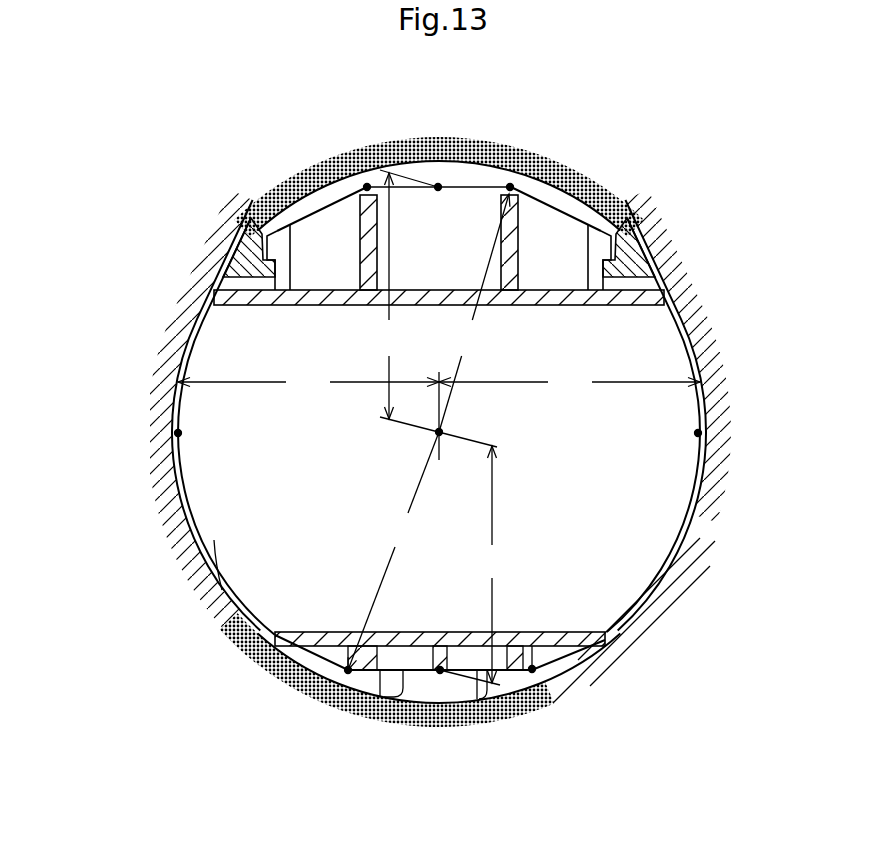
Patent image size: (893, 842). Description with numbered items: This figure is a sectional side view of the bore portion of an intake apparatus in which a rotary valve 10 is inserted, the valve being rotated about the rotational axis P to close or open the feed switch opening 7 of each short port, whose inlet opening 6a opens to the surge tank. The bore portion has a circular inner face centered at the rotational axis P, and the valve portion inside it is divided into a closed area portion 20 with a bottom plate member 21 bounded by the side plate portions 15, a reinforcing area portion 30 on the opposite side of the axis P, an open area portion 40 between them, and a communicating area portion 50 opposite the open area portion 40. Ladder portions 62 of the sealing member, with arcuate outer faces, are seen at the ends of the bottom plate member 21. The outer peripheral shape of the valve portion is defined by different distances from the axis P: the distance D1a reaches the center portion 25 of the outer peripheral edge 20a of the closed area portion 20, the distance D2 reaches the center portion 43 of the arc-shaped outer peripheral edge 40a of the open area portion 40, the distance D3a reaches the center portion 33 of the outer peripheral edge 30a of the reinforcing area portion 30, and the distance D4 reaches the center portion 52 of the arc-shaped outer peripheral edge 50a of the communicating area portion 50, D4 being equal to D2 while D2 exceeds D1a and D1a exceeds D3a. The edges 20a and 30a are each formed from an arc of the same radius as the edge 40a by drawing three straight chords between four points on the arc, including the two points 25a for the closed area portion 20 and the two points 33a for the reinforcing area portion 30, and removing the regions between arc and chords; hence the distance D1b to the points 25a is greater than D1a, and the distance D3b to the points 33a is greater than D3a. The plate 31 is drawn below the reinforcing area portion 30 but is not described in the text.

The feed switch opening 7 is at (294, 174).
The points on the outer peripheral edge of the closed area portion 25a is at (367, 186).
The closed area portion 20 is at (439, 186).
The outer peripheral edge of the closed area portion 20a is at (556, 174).
The ladder portion 62 is at (252, 262).
The center portion of the outer peripheral edge of the closed area portion 25 is at (440, 192).
The bottom plate member 21 is at (555, 308).
The side plate portion 15 is at (205, 360).
The center portion of the outer peripheral edge of the open area portion 43 is at (178, 433).
The center portion of the outer peripheral edge of the communicating area portion 52 is at (658, 433).
The open area portion 40 is at (179, 413).
The communicating area portion 50 is at (694, 441).
The outer peripheral edge of the open area portion 40a is at (191, 530).
The outer peripheral edge of the communicating area portion 50a is at (694, 507).
The lower plate 31 is at (440, 631).
The rotary valve 10 is at (650, 592).
The inlet opening of the short port 6a is at (262, 664).
The points on the outer peripheral edge of the reinforcing area portion 33a is at (348, 672).
The outer peripheral edge of the reinforcing area portion 30a is at (414, 732).
The reinforcing area portion 30 is at (462, 717).
The center portion of the outer peripheral edge of the reinforcing area portion 33 is at (441, 672).
The rotational axis P is at (441, 432).
The distance D1a is at (389, 296).
The distance D1b is at (474, 313).
The distance D2 is at (308, 384).
The distance D4 is at (569, 384).
The distance D3a is at (478, 565).
The distance D3b is at (393, 551).